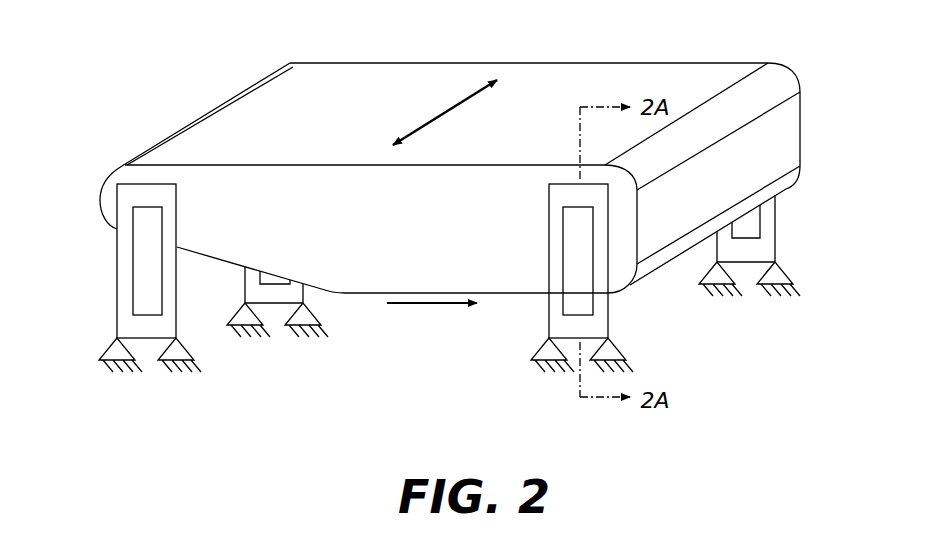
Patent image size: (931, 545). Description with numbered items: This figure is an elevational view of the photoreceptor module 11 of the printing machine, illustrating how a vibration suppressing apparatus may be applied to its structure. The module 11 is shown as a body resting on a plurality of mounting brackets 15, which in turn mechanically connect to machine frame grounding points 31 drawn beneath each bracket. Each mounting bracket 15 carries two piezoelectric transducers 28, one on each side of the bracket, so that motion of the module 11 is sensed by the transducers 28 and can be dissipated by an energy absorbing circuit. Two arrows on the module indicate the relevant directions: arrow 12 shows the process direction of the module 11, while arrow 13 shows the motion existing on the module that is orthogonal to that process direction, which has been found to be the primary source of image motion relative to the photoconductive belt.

The photoreceptor module 11 is at (505, 58).
The arrow indicating process direction 12 is at (433, 310).
The arrow indicating motion 13 is at (438, 117).
The mounting bracket 15 is at (122, 300).
The piezoelectric transducer 28 is at (137, 268).
The machine frame grounding point 31 is at (102, 353).